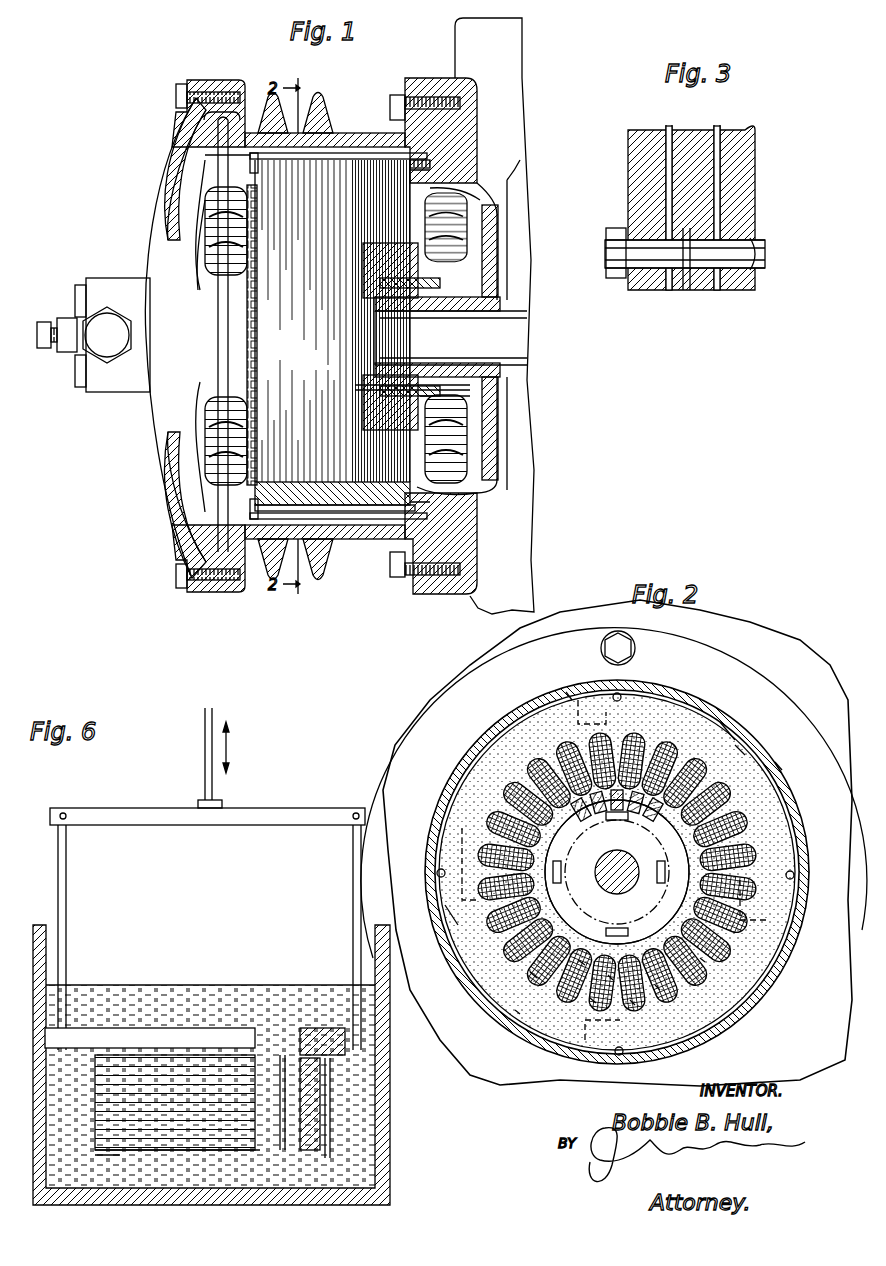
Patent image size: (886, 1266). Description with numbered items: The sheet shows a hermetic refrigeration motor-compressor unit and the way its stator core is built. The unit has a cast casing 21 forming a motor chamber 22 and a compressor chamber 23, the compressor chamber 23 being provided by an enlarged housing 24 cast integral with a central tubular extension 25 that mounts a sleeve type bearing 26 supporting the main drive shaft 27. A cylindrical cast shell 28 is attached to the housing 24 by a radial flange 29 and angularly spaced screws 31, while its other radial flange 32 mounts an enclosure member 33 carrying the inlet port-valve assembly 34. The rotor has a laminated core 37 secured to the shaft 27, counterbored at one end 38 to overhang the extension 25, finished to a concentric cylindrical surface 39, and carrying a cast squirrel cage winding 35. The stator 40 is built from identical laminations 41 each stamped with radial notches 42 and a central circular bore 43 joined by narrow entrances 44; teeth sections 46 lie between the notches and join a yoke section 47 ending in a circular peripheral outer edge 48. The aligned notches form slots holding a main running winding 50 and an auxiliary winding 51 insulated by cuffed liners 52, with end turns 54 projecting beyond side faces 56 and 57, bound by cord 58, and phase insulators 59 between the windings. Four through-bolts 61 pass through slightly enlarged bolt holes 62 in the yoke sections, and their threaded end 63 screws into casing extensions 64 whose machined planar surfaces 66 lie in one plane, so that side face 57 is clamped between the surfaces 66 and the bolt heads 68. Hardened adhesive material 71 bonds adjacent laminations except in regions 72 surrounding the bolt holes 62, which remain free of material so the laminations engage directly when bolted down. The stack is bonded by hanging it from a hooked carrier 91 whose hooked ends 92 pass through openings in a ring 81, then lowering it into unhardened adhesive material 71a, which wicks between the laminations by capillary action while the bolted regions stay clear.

In FIG. 1, the casing 21 is at (532, 54).
In FIG. 1, the motor chamber 22 is at (500, 262).
In FIG. 1, the compressor chamber 23 is at (240, 160).
In FIG. 2, the compressor chamber 23 is at (775, 765).
In FIG. 1, the housing 24 is at (445, 80).
In FIG. 1, the tubular extension 25 is at (520, 304).
In FIG. 1, the sleeve type bearing 26 is at (440, 315).
In FIG. 1, the main drive shaft 27 is at (490, 340).
In FIG. 1, the cylindrical cast shell 28 is at (295, 108).
In FIG. 2, the cylindrical cast shell 28 is at (720, 725).
In FIG. 1, the radial flange 29 is at (418, 80).
In FIG. 2, the radial flange 29 is at (742, 652).
In FIG. 1, the screws 31 is at (397, 576).
In FIG. 2, the screws 31 is at (630, 648).
In FIG. 1, the radial flange 32 is at (205, 82).
In FIG. 1, the enclosure member 33 is at (165, 240).
In FIG. 1, the inlet port-valve assembly 34 is at (100, 322).
In FIG. 1, the squirrel cage winding 35 is at (470, 287).
In FIG. 1, the laminated core 37 is at (375, 285).
In FIG. 1, the counterbored end 38 is at (400, 389).
In FIG. 2, the cylindrical surface 39 is at (620, 858).
In FIG. 1, the stator 40 is at (250, 485).
In FIG. 2, the stator 40 is at (738, 746).
In FIG. 3, the laminations 41 is at (688, 168).
In FIG. 2, the notches 42 is at (530, 972).
In FIG. 1, the central circular bore 43 is at (395, 250).
In FIG. 2, the central circular bore 43 is at (610, 975).
In FIG. 2, the narrow entrances 44 is at (580, 958).
In FIG. 2, the teeth sections 46 is at (630, 1000).
In FIG. 2, the yoke section 47 is at (765, 800).
In FIG. 2, the peripheral outer edge 48 is at (515, 1010).
In FIG. 1, the main running winding 50 is at (200, 272).
In FIG. 2, the main running winding 50 is at (655, 985).
In FIG. 2, the auxiliary winding 51 is at (700, 960).
In FIG. 2, the cuffed liners 52 is at (592, 998).
In FIG. 1, the end turns 54 is at (455, 238).
In FIG. 1, the side face 56 is at (256, 168).
In FIG. 1, the side face 57 is at (470, 192).
In FIG. 1, the cord 58 is at (462, 218).
In FIG. 2, the phase insulators 59 is at (512, 795).
In FIG. 1, the through-bolts 61 is at (318, 508).
In FIG. 3, the through-bolts 61 is at (668, 255).
In FIG. 2, the through-bolts 61 is at (445, 880).
In FIG. 3, the bolt holes 62 is at (738, 270).
In FIG. 2, the bolt holes 62 is at (455, 920).
In FIG. 1, the threaded end 63 is at (425, 165).
In FIG. 1, the casing extensions 64 is at (440, 518).
In FIG. 1, the planar surfaces 66 is at (450, 500).
In FIG. 2, the planar surfaces 66 is at (566, 692).
In FIG. 1, the bolt heads 68 is at (230, 518).
In FIG. 3, the bolt heads 68 is at (616, 228).
In FIG. 3, the hardened adhesive material 71 is at (718, 124).
In FIG. 2, the hardened adhesive material 71 is at (545, 740).
In FIG. 6, the unhardened adhesive material 71a is at (365, 1150).
In FIG. 3, the regions free of material 72 is at (690, 290).
In FIG. 2, the regions free of material 72 is at (575, 1050).
In FIG. 6, the ring 81 is at (388, 1050).
In FIG. 6, the hooked carrier 91 is at (290, 810).
In FIG. 6, the hooked ends 92 is at (356, 888).